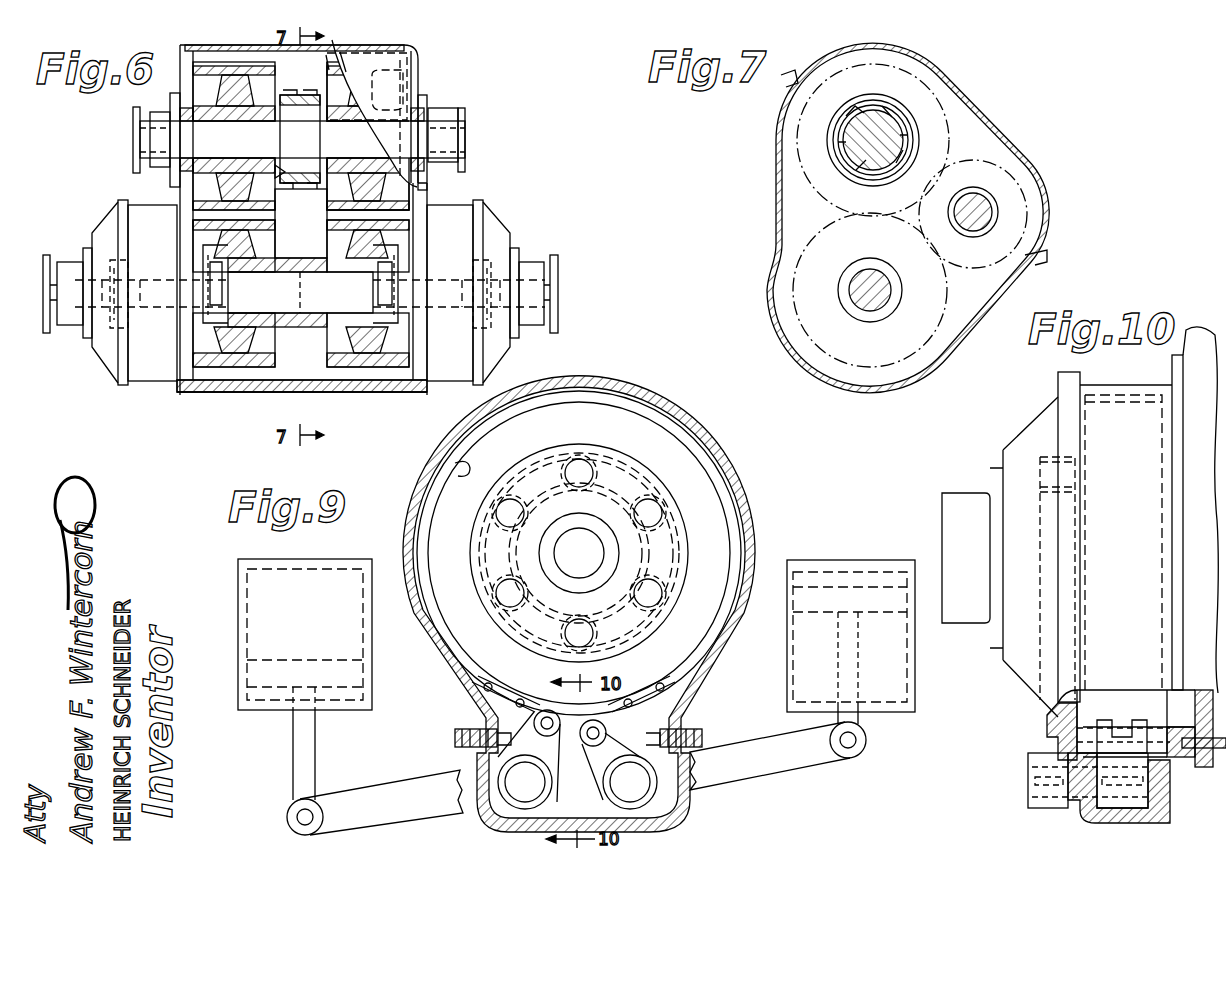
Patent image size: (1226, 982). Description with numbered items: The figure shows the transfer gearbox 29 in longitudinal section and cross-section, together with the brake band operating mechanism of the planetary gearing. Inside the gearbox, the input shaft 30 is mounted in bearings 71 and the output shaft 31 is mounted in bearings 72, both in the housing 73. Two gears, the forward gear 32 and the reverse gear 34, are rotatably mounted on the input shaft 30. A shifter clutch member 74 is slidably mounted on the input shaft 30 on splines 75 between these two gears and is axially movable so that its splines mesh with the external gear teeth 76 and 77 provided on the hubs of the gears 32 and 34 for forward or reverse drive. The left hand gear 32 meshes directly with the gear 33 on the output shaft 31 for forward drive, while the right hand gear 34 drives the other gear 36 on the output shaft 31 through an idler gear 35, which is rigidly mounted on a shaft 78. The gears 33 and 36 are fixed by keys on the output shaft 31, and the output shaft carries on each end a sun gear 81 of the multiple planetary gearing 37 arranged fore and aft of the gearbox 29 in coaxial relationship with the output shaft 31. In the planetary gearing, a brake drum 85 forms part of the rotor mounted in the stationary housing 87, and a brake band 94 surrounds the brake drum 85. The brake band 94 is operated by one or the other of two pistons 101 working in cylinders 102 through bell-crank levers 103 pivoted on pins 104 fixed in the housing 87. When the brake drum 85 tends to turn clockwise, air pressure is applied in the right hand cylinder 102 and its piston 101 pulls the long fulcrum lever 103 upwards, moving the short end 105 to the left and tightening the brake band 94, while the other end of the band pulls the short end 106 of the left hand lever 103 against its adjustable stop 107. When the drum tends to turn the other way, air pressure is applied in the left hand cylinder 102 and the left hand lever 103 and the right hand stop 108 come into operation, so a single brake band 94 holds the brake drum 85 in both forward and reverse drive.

In FIG. 6, the transfer gearbox 29 is at (420, 58).
In FIG. 7, the transfer gearbox 29 is at (778, 140).
In FIG. 6, the input shaft 30 is at (215, 132).
In FIG. 7, the input shaft 30 is at (846, 160).
In FIG. 6, the output shaft 31 is at (262, 300).
In FIG. 7, the output shaft 31 is at (865, 305).
In FIG. 6, the forward gear 32 is at (236, 68).
In FIG. 6, the forward gear on output shaft 33 is at (222, 368).
In FIG. 6, the reverse gear 34 is at (330, 50).
In FIG. 7, the reverse gear 34 is at (925, 90).
In FIG. 7, the idler gear 35 is at (1012, 175).
In FIG. 6, the reverse gear on output shaft 36 is at (340, 368).
In FIG. 7, the reverse gear on output shaft 36 is at (948, 300).
In FIG. 6, the multiple planetary gearing 37 is at (150, 378).
In FIG. 6, the bearings 71 is at (183, 114).
In FIG. 6, the bearings 72 is at (205, 302).
In FIG. 6, the housing 73 is at (290, 385).
In FIG. 10, the housing 73 is at (1196, 335).
In FIG. 6, the shifter clutch member 74 is at (288, 190).
In FIG. 7, the shifter clutch member 74 is at (908, 140).
In FIG. 6, the splines 75 is at (297, 116).
In FIG. 7, the splines 75 is at (873, 108).
In FIG. 6, the external gear teeth 76 is at (276, 172).
In FIG. 6, the external gear teeth 77 is at (332, 172).
In FIG. 7, the shaft 78 is at (978, 228).
In FIG. 6, the sun gear 81 is at (115, 340).
In FIG. 9, the brake drum 85 is at (455, 463).
In FIG. 9, the stationary housing 87 is at (640, 406).
In FIG. 10, the stationary housing 87 is at (1142, 395).
In FIG. 9, the brake band 94 is at (740, 562).
In FIG. 10, the brake band 94 is at (1105, 705).
In FIG. 9, the pistons 101 is at (330, 665).
In FIG. 9, the cylinders 102 is at (347, 560).
In FIG. 9, the bell-crank levers 103 is at (437, 805).
In FIG. 10, the bell-crank levers 103 is at (1035, 791).
In FIG. 9, the pins 104 is at (535, 786).
In FIG. 10, the pins 104 is at (1160, 793).
In FIG. 9, the short end 105 is at (569, 756).
In FIG. 9, the short end 106 is at (470, 752).
In FIG. 10, the short end 106 is at (1140, 764).
In FIG. 9, the adjustable stop 107 is at (458, 742).
In FIG. 9, the right hand stop 108 is at (700, 742).